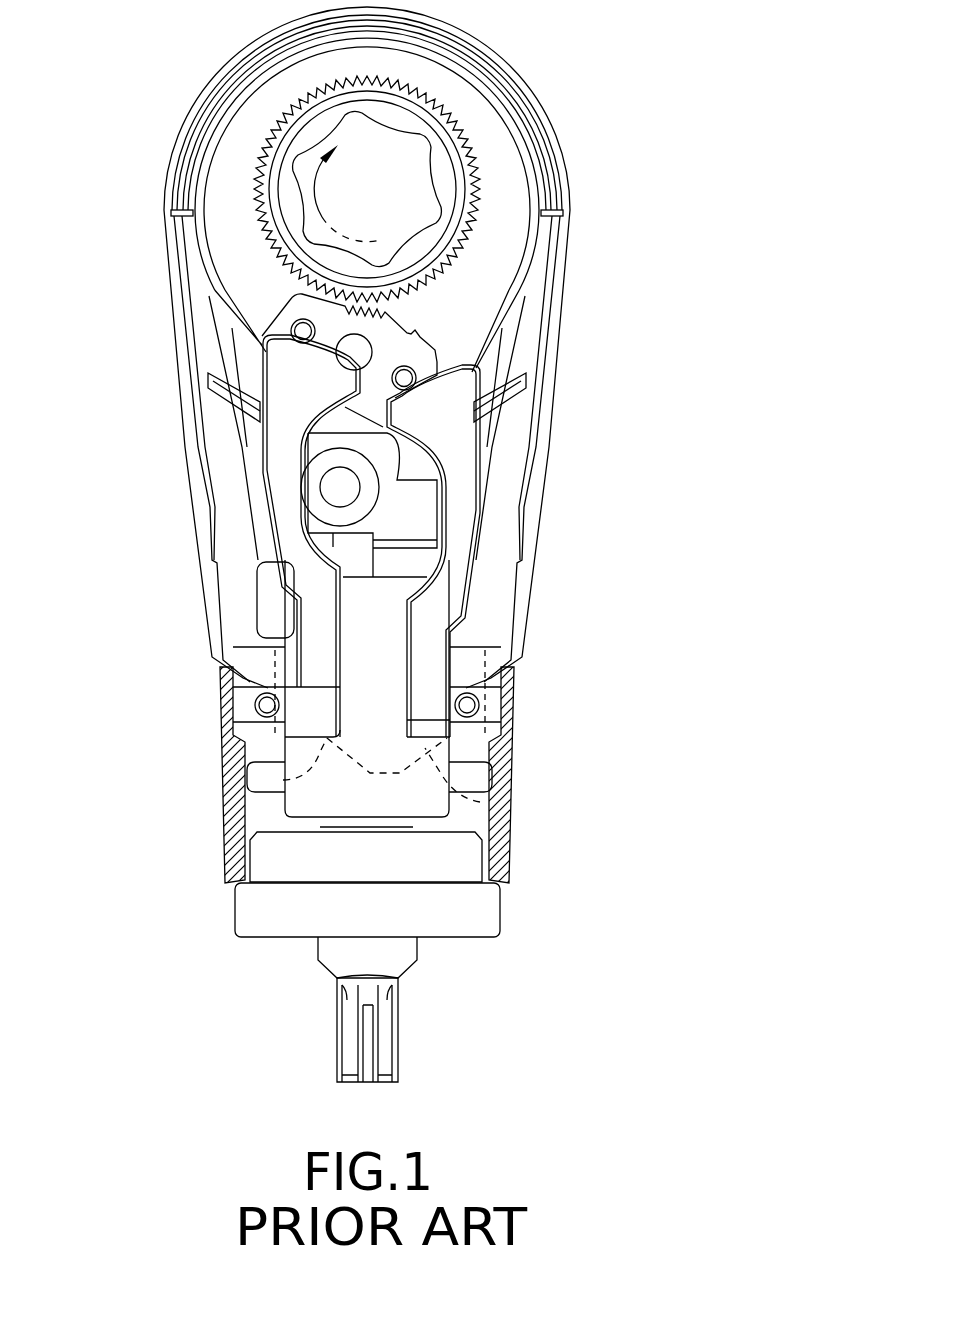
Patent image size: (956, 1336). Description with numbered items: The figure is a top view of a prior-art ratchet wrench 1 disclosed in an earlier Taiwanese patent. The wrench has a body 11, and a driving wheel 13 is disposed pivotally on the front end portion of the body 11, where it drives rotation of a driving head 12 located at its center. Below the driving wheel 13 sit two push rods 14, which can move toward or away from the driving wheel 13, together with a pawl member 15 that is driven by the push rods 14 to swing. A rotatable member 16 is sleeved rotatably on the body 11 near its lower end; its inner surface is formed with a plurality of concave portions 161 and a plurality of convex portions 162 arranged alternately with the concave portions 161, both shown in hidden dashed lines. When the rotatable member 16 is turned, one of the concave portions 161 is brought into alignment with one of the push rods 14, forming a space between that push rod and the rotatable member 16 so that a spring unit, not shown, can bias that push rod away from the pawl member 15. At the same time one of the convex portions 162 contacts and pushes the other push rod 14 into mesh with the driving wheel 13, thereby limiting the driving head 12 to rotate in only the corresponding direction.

The ratchet wrench 1 is at (176, 100).
The body 11 is at (178, 340).
The driving head 12 is at (380, 135).
The driving wheel 13 is at (253, 187).
The push rods 14 is at (262, 510).
The pawl member 15 is at (440, 297).
The rotatable member 16 is at (225, 723).
The concave portions 161 is at (480, 802).
The convex portions 162 is at (283, 780).